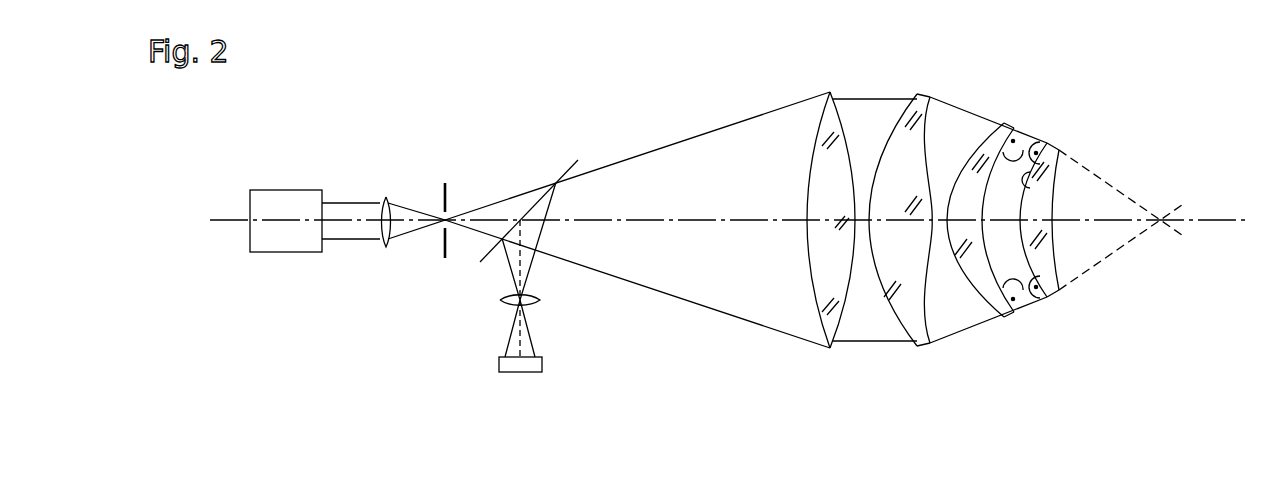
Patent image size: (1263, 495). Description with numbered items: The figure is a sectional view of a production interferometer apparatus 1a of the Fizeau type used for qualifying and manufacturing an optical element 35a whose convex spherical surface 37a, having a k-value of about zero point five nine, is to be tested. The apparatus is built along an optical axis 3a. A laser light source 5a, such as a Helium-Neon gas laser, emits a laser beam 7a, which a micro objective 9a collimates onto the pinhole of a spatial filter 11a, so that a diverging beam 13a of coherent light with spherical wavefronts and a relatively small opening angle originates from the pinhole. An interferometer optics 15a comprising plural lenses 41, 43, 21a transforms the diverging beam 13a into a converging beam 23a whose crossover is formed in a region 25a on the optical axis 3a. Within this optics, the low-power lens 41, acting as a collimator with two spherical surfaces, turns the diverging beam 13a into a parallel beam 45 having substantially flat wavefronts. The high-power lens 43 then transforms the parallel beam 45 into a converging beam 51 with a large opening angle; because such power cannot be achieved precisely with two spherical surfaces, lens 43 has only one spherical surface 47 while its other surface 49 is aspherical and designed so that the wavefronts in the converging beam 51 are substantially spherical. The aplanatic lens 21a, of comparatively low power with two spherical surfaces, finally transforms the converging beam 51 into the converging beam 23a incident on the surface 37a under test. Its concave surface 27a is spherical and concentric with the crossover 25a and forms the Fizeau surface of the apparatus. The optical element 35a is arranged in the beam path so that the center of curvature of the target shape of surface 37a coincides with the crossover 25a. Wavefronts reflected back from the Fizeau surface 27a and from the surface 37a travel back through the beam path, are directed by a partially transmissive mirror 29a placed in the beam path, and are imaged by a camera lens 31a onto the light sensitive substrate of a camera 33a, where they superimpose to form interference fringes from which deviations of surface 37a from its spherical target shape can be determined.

The production interferometer apparatus 1a is at (613, 90).
The optical axis 3a is at (227, 222).
The laser light source 5a is at (285, 190).
The laser beam 7a is at (355, 240).
The micro objective 9a is at (386, 197).
The spatial filter 11a is at (447, 197).
The diverging beam 13a is at (666, 147).
The interferometer optics 15a is at (1004, 77).
The lens 21a is at (1022, 243).
The converging beam 23a is at (1071, 258).
The crossover region 25a is at (1160, 213).
The concave surface 27a is at (1032, 150).
The partially transmissive mirror 29a is at (572, 166).
The camera lens 31a is at (540, 299).
The camera 33a is at (542, 364).
The optical element 35a is at (1060, 292).
The convex spherical surface 37a is at (1030, 180).
The lens 41 is at (830, 347).
The lens 43 is at (914, 231).
The parallel beam 45 is at (876, 341).
The spherical surface 47 is at (890, 127).
The aspherical surface 49 is at (923, 130).
The converging beam 51 is at (968, 328).